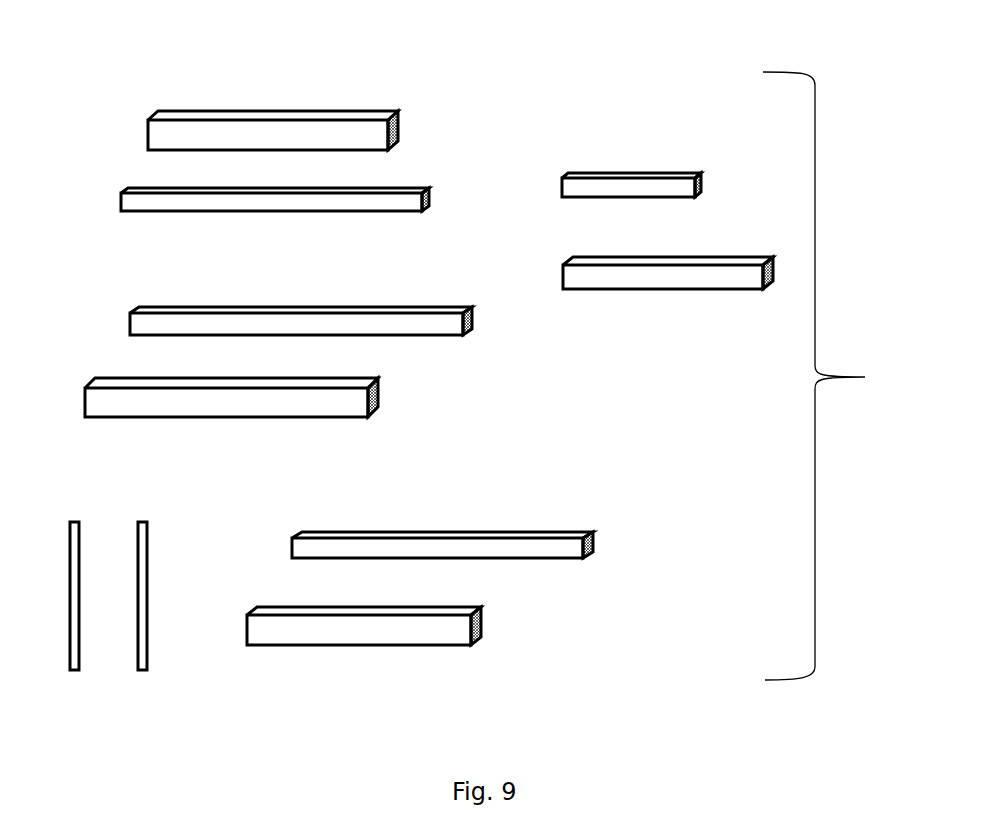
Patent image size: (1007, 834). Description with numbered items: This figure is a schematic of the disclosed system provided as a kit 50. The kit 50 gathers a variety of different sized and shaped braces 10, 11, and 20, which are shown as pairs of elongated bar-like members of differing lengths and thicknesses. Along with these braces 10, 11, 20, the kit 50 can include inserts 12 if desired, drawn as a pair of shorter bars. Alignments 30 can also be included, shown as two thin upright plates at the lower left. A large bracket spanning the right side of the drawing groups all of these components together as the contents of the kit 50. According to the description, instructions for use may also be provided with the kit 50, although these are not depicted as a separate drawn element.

The brace 10 is at (402, 202).
The brace 11 is at (460, 630).
The insert 12 is at (750, 257).
The brace 20 is at (428, 325).
The alignment 30 is at (77, 660).
The kit 50 is at (834, 376).